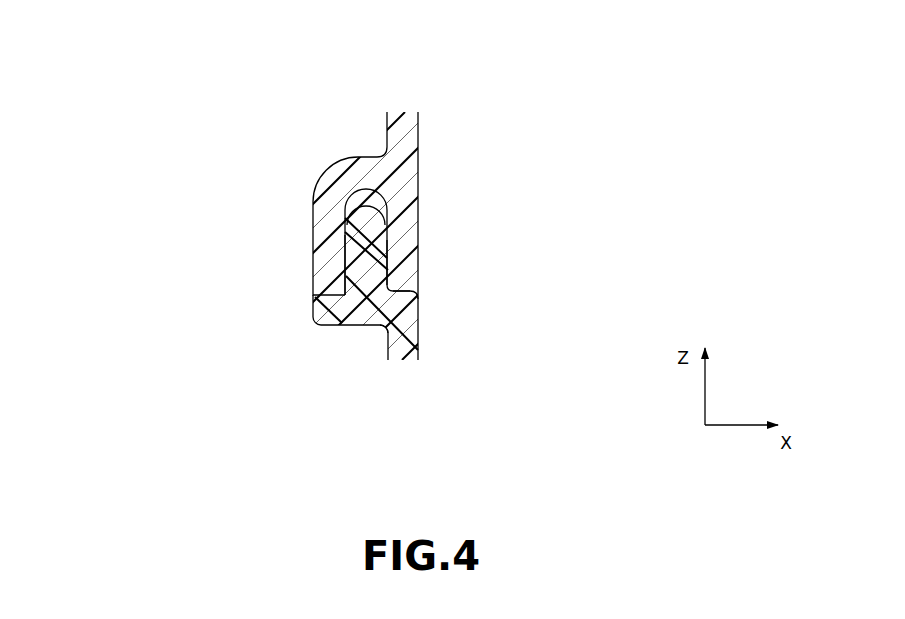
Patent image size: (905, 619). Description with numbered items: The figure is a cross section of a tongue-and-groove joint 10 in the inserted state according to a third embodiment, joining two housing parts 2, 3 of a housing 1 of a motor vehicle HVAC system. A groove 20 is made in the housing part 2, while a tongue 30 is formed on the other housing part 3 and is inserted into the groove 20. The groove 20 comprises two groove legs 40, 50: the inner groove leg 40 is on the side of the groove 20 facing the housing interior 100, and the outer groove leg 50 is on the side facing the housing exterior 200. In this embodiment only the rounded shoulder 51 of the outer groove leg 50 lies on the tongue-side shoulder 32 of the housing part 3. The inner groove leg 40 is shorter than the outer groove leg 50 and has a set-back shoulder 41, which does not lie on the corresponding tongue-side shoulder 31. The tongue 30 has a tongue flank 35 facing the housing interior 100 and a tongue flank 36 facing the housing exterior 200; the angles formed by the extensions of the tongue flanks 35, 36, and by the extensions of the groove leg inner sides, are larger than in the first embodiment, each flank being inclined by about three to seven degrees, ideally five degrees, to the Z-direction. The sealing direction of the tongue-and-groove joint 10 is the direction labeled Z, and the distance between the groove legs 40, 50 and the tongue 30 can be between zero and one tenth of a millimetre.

The housing 1 is at (156, 57).
The housing part 2 is at (403, 86).
The housing part 3 is at (403, 388).
The tongue-and-groove joint 10 is at (527, 230).
The groove 20 is at (344, 151).
The tongue 30 is at (364, 253).
The tongue-side shoulder 31 is at (407, 307).
The tongue-side shoulder 32 is at (320, 310).
The tongue flank 35 is at (406, 251).
The tongue flank 36 is at (345, 251).
The inner groove leg 40 is at (433, 214).
The set-back shoulder 41 is at (402, 272).
The outer groove leg 50 is at (299, 214).
The rounded shoulder 51 is at (345, 276).
The housing interior 100 is at (666, 275).
The housing exterior 200 is at (72, 268).